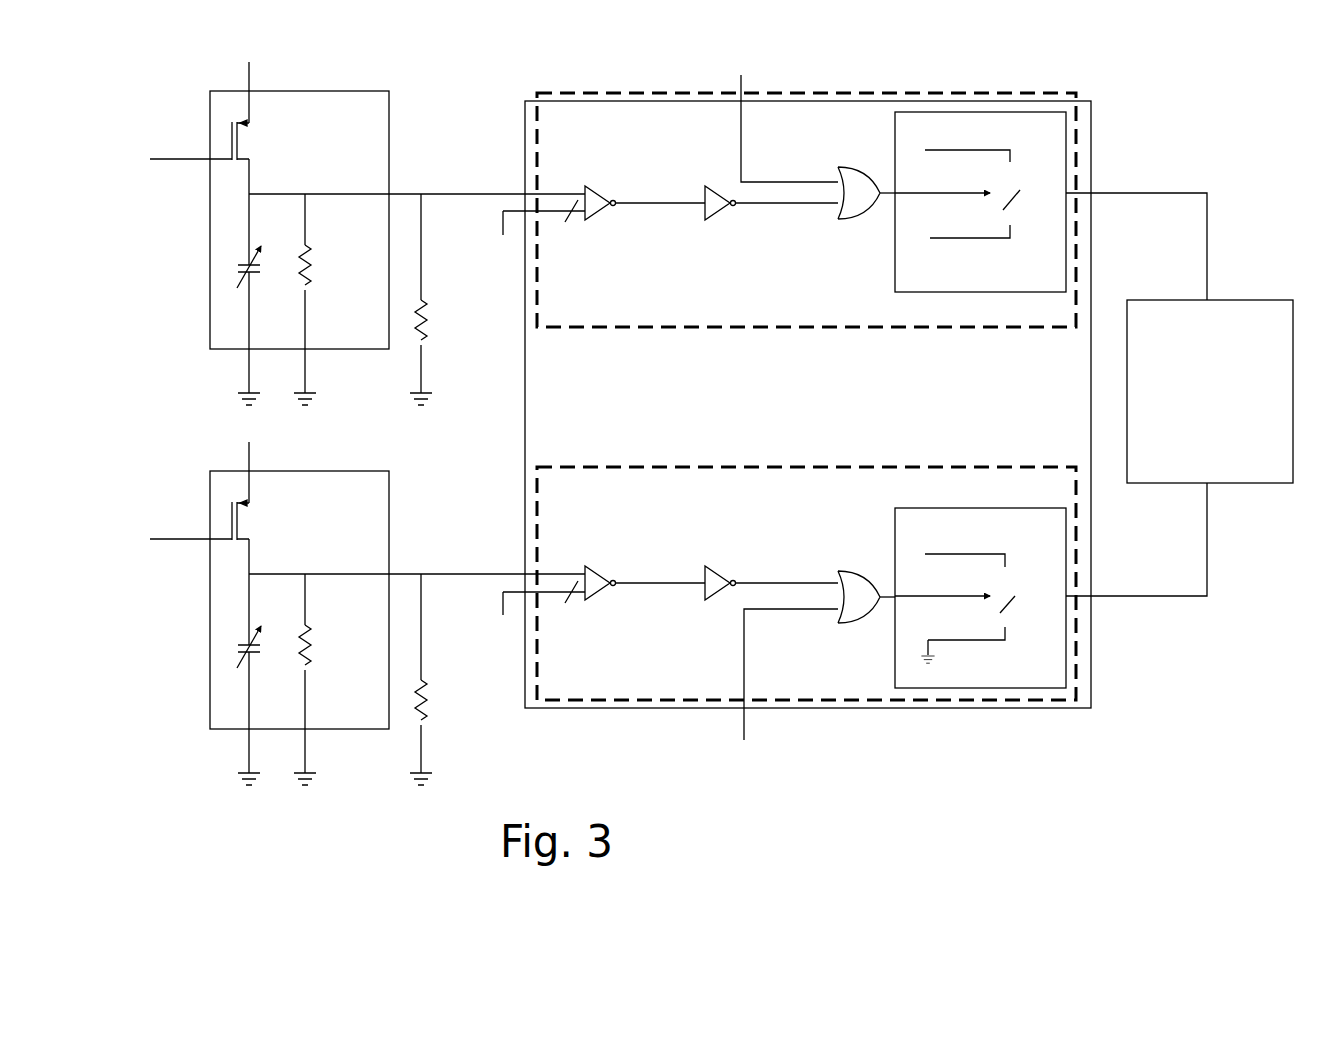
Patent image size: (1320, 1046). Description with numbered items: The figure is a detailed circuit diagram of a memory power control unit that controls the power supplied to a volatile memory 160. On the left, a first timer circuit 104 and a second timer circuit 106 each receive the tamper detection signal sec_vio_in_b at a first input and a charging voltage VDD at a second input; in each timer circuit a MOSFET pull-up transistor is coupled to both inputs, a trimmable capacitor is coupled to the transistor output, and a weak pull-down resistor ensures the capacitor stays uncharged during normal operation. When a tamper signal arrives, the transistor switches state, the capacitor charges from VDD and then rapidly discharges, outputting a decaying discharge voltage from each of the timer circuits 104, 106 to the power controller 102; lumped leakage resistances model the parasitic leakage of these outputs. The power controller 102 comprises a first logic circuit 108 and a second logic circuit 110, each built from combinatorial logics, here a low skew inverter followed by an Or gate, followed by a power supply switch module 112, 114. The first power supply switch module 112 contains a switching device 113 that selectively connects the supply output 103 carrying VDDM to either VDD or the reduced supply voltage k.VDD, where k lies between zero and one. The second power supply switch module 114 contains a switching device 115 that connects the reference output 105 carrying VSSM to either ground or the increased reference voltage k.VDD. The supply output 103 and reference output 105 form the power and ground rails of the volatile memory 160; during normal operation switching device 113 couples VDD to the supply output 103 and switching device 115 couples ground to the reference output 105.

The power controller 102 is at (1097, 660).
The supply output 103 is at (1168, 188).
The first timer circuit 104 is at (208, 275).
The reference output 105 is at (1212, 588).
The second timer circuit 106 is at (208, 714).
The first logic circuit 108 is at (815, 230).
The second logic circuit 110 is at (798, 570).
The first power supply switch module 112 is at (1029, 235).
The first switching device 113 is at (1027, 185).
The second power supply switch module 114 is at (1011, 578).
The second switching device 115 is at (1030, 601).
The volatile memory 160 is at (1210, 391).